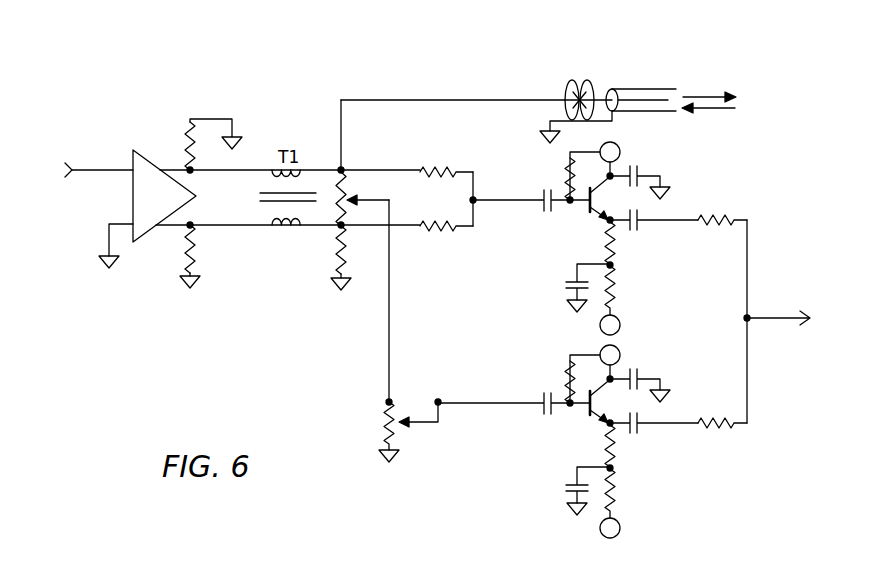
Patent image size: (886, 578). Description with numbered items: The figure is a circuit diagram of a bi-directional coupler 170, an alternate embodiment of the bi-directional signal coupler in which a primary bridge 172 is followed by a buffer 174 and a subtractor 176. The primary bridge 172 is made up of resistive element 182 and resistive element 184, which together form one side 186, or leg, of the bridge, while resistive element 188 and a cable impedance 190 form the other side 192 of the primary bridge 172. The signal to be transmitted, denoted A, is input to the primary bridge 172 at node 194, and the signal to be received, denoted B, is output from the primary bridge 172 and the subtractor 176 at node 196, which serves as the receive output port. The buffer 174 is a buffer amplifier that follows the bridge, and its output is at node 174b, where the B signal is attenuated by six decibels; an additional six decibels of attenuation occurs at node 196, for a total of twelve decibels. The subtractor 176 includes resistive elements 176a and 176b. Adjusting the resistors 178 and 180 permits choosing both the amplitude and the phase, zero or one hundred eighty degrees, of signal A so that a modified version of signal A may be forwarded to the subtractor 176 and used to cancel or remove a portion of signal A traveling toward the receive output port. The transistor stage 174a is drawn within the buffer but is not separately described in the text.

The bi-directional coupler 170 is at (111, 95).
The primary bridge 172 is at (360, 80).
The buffer 174 is at (720, 193).
The transistor of first stage 174a is at (561, 255).
The node 174b is at (622, 228).
The subtractor 176 is at (748, 436).
The resistive element 176a is at (730, 215).
The resistive element 176b is at (707, 432).
The resistor 178 is at (351, 202).
The resistor 180 is at (380, 435).
The resistive element 182 is at (433, 168).
The resistive element 184 is at (423, 233).
The side of the primary bridge 186 is at (460, 158).
The resistive element 188 is at (335, 269).
The cable impedance 190 is at (676, 90).
The side of the primary bridge 192 is at (323, 140).
The node 194 is at (70, 182).
The node 196 is at (804, 328).